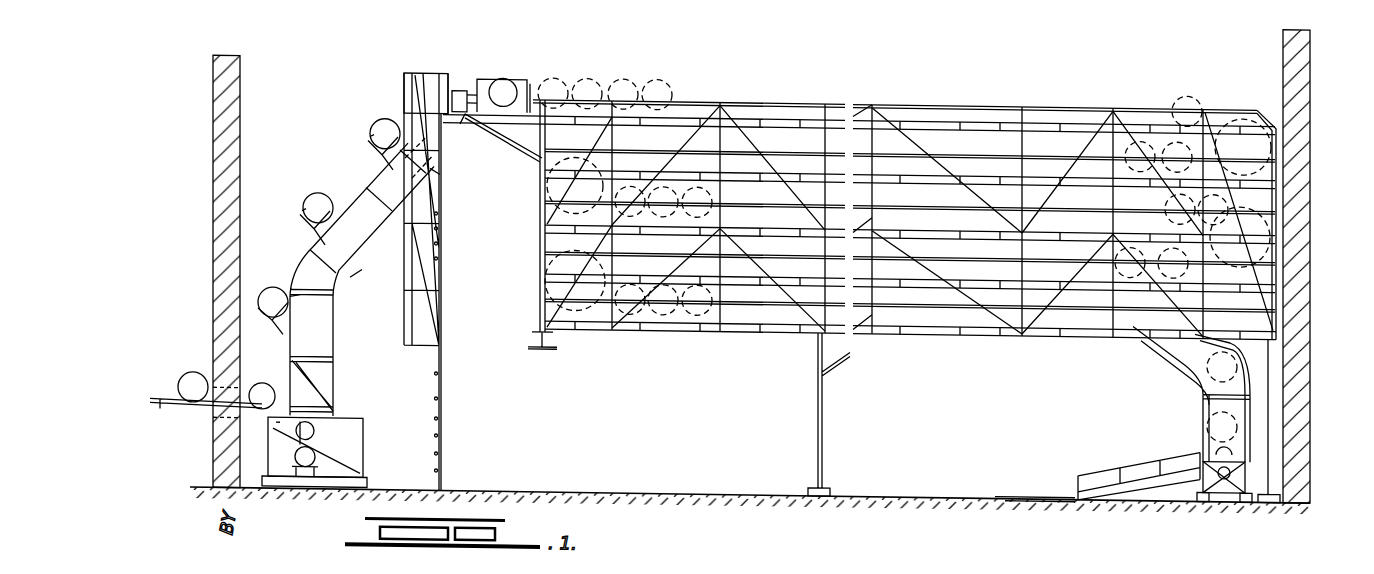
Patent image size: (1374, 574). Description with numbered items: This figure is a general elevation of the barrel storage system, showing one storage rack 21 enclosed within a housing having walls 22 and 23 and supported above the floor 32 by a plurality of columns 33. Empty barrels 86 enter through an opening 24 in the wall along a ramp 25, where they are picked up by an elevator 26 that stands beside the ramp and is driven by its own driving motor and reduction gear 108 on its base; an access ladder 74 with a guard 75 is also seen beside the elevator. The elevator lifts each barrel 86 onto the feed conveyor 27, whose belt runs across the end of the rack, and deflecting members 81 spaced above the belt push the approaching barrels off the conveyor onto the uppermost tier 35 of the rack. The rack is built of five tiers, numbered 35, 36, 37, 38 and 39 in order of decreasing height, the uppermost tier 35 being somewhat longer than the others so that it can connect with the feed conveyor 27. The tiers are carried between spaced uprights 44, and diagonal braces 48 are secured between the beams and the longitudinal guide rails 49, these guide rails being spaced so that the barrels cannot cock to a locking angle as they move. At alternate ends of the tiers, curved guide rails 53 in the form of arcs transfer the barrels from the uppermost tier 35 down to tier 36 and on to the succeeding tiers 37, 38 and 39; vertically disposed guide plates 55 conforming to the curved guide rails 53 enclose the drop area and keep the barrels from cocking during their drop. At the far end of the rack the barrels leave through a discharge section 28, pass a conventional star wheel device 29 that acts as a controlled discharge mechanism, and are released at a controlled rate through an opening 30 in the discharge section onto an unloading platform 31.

The storage rack 21 is at (783, 90).
The wall 22 is at (240, 136).
The wall 23 is at (1283, 40).
The opening 24 is at (210, 383).
The ramp 25 is at (165, 412).
The elevator 26 is at (358, 277).
The feed conveyor 27 is at (501, 124).
The discharge section 28 is at (1200, 377).
The star wheel device 29 is at (1203, 445).
The opening 30 is at (1203, 405).
The unloading platform 31 is at (1134, 483).
The floor 32 is at (910, 491).
The column 33 is at (822, 416).
The uppermost tier 35 is at (937, 114).
The tier 36 is at (910, 145).
The tier 37 is at (910, 195).
The tier 38 is at (910, 247).
The tier 39 is at (910, 296).
The upright 44 is at (1025, 244).
The diagonal brace 48 is at (775, 297).
The guide rail 49 is at (1040, 133).
The curved guide rail 53 is at (1275, 174).
The guide plate 55 is at (1240, 110).
The access ladder 74 is at (440, 402).
The guard 75 is at (415, 347).
The deflecting member 81 is at (500, 80).
The barrel 86 is at (318, 203).
The driving motor and reduction gear 108 is at (330, 471).